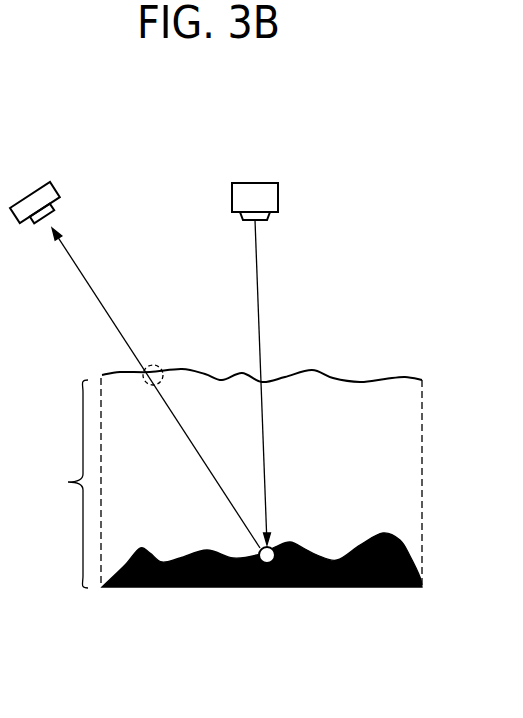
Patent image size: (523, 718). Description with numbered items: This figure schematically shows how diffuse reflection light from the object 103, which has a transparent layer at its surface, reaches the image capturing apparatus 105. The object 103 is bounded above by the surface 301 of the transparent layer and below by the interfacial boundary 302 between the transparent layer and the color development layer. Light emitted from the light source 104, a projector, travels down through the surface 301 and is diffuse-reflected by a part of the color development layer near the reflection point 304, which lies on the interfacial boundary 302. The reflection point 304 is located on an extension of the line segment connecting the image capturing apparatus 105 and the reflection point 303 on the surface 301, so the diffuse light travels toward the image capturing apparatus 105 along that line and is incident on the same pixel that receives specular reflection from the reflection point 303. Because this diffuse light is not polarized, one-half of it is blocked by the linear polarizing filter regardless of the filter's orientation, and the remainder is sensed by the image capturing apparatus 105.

The object 103 is at (219, 483).
The light source 104 is at (257, 183).
The image capturing apparatus 105 is at (29, 190).
The surface 301 is at (312, 370).
The interfacial boundary 302 is at (338, 560).
The reflection point 303 is at (153, 365).
The reflection point 304 is at (258, 552).